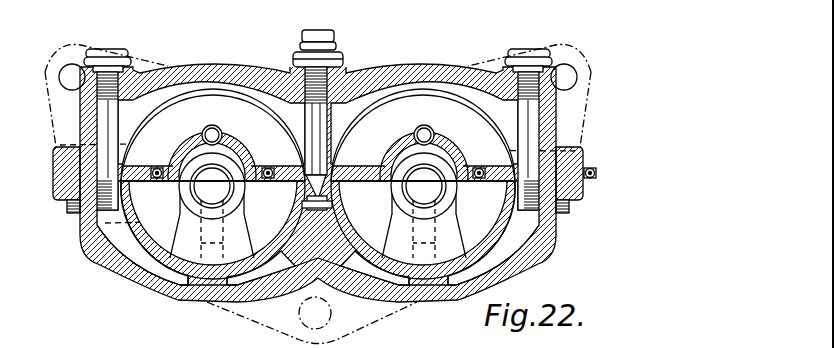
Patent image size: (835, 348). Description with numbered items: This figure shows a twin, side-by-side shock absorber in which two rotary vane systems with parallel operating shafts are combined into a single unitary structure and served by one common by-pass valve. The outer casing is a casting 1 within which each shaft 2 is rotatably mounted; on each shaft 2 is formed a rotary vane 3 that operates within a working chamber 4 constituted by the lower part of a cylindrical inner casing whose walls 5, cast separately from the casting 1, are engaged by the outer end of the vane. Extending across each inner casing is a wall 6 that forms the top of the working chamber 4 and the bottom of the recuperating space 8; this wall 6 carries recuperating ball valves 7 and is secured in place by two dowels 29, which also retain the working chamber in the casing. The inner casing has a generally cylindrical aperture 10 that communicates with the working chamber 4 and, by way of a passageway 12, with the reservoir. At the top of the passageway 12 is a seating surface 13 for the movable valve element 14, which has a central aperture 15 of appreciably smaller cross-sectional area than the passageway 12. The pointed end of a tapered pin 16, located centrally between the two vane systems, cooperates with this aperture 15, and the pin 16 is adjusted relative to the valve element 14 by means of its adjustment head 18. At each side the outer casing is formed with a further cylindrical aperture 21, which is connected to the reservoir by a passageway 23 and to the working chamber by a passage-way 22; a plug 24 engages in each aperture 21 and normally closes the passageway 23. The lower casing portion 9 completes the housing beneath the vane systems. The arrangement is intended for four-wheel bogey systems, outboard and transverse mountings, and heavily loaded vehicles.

The casting 1 is at (190, 67).
The shaft 2 is at (233, 150).
The rotary vane 3 is at (195, 207).
The working chamber 4 is at (104, 228).
The walls 5 is at (174, 289).
The wall 6 is at (190, 150).
The recuperating ball valves 7 is at (268, 168).
The recuperating space 8 is at (153, 123).
The casing corner 9 is at (89, 251).
The aperture 10 is at (290, 203).
The passageway 12 is at (318, 212).
The seating surface 13 is at (284, 220).
The movable valve element 14 is at (328, 212).
The central aperture 15 is at (310, 210).
The tapered pin 16 is at (322, 121).
The adjustment head 18 is at (317, 30).
The cylindrical aperture 21 is at (67, 195).
The passage-way 22 is at (186, 190).
The passageway 23 is at (73, 216).
The plug 24 is at (110, 127).
The dowels 29 is at (212, 126).